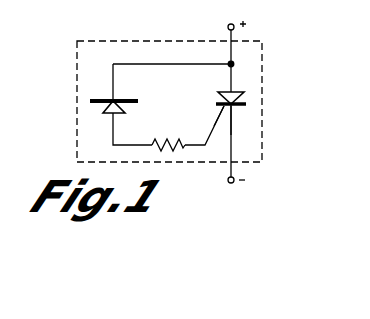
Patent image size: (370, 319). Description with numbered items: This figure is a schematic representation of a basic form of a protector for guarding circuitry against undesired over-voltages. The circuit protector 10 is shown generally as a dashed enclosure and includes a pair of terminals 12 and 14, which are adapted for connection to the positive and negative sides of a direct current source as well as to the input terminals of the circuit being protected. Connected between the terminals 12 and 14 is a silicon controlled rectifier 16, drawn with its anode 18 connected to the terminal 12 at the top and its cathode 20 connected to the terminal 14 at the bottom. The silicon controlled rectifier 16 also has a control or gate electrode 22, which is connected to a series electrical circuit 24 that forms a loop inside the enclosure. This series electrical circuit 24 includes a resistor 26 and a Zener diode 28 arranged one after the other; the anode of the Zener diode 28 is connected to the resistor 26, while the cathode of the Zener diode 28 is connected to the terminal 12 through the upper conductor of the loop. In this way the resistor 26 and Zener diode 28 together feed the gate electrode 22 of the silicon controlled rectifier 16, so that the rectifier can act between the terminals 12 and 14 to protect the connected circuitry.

The circuit protector 10 is at (262, 57).
The terminal 12 is at (233, 23).
The terminal 14 is at (232, 184).
The silicon controlled rectifier 16 is at (247, 100).
The anode 18 is at (236, 90).
The cathode 20 is at (232, 122).
The control or gate electrode 22 is at (218, 110).
The series electrical circuit 24 is at (141, 124).
The resistor 26 is at (173, 152).
The Zener diode 28 is at (111, 99).